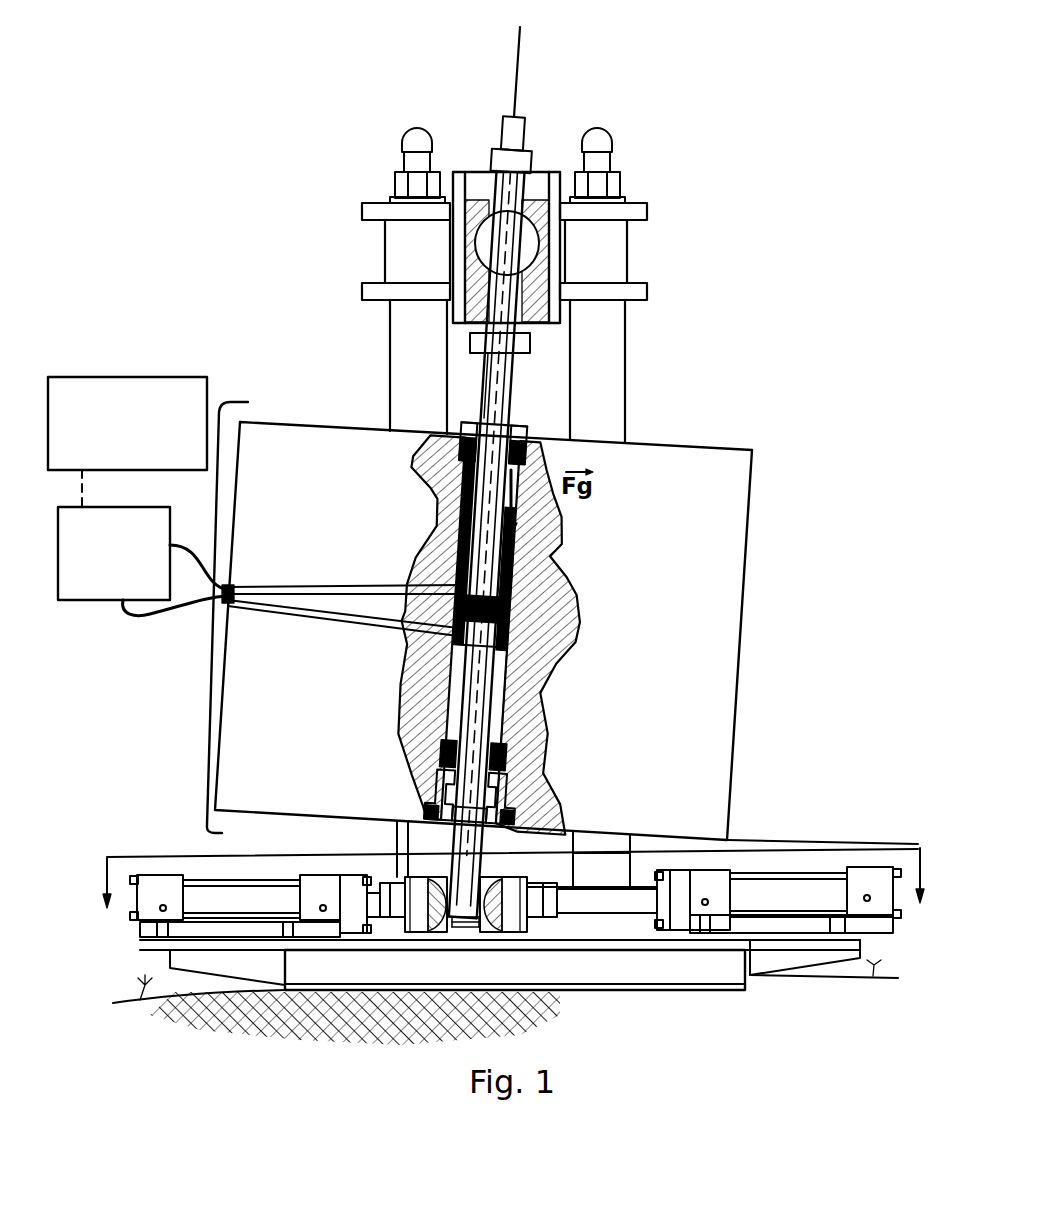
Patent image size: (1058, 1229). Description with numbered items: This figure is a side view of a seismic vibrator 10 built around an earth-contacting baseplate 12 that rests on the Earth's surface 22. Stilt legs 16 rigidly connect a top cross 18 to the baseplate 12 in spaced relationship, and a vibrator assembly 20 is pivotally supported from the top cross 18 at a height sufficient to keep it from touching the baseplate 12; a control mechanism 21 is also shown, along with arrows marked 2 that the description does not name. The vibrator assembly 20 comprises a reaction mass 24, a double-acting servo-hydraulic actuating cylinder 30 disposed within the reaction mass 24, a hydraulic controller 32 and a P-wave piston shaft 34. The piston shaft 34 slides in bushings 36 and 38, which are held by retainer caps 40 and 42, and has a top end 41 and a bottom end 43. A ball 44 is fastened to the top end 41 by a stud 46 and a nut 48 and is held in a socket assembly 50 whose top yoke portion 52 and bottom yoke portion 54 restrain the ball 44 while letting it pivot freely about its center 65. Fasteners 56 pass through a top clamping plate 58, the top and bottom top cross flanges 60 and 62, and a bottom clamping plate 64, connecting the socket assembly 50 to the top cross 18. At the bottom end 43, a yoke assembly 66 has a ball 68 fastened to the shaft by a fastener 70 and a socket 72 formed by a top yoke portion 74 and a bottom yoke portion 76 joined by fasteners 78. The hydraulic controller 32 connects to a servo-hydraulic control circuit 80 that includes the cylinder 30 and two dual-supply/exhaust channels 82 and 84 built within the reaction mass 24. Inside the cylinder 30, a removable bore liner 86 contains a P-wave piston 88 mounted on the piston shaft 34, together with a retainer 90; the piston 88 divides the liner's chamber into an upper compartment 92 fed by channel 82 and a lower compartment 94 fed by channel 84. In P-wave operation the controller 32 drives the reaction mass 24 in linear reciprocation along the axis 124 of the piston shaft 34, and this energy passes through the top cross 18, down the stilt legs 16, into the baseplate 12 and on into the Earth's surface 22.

The seismic vibrator 10 is at (655, 1079).
The earth-contacting baseplate 12 is at (762, 976).
The stilt legs 16 is at (388, 320).
The top cross 18 is at (627, 227).
The vibrator assembly 20 is at (206, 678).
The control mechanism 21 is at (88, 880).
The section line 2 is at (514, 898).
The Earth's surface 22 is at (113, 1003).
The reaction mass 24 is at (747, 630).
The double-acting, servo-hydraulic, actuating cylinder 30 is at (530, 597).
The hydraulic controller 32 is at (73, 376).
The P-wave piston shaft 34 is at (488, 703).
The bushing 36 is at (515, 562).
The bushing 38 is at (537, 680).
The retainer cap 40 is at (523, 415).
The top end 41 is at (487, 368).
The retainer cap 42 is at (500, 780).
The bottom end 43 is at (418, 937).
The ball 44 is at (548, 172).
The stud 46 is at (523, 117).
The nut 48 is at (492, 165).
The socket assembly 50 is at (470, 166).
The top yoke portion 52 is at (627, 243).
The bottom yoke portion 54 is at (627, 305).
The fasteners 56 is at (560, 180).
The top clamping plate 58 is at (456, 172).
The top top cross flange 60 is at (372, 205).
The bottom top cross flange 62 is at (373, 283).
The bottom clamping plate 64 is at (473, 330).
The center 65 is at (490, 240).
The yoke assembly 66 is at (520, 945).
The ball 68 is at (480, 943).
The fastener 70 is at (448, 940).
The socket 72 is at (393, 857).
The top yoke portion 74 is at (513, 870).
The bottom yoke portion 76 is at (555, 888).
The fasteners 78 is at (412, 827).
The servo-hydraulic control circuit 80 is at (118, 603).
The dual-supply/exhaust channel 82 is at (328, 595).
The dual-supply/exhaust channel 84 is at (330, 618).
The removable bore liner 86 is at (520, 582).
The P-wave piston 88 is at (513, 630).
The retainer 90 is at (513, 573).
The upper compartment 92 is at (458, 582).
The lower compartment 94 is at (557, 647).
The axis 124 is at (520, 50).